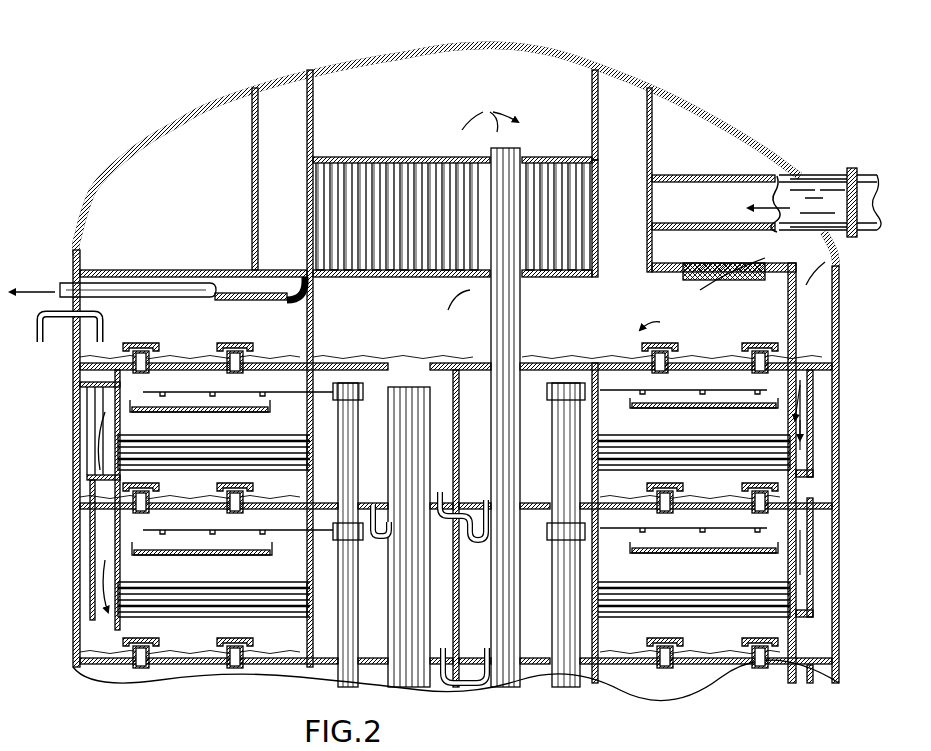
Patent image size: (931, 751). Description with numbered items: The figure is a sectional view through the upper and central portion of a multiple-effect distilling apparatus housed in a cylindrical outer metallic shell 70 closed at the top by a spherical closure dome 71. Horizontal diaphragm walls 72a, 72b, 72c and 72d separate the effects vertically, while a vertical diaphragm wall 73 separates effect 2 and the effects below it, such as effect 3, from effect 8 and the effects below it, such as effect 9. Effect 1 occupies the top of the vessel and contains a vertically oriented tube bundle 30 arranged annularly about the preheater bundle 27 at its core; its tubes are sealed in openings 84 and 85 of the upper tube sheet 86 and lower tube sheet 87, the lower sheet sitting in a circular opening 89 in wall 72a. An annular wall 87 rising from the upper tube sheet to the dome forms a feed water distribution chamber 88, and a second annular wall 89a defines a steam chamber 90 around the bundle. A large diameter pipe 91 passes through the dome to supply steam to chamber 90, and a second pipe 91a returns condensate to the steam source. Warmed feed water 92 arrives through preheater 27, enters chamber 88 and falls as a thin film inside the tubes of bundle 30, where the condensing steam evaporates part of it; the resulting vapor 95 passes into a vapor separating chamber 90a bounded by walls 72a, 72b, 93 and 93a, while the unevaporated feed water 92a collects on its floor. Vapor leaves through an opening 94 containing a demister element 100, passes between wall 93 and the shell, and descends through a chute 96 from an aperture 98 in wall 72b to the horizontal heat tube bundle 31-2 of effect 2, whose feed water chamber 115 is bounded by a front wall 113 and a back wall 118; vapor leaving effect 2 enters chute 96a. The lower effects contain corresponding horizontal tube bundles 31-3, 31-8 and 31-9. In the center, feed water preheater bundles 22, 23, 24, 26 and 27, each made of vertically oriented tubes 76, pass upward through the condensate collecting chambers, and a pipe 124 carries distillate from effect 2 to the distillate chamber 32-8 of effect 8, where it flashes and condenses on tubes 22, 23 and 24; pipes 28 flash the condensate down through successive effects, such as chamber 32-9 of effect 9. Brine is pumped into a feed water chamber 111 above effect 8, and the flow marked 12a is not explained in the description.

The effect 1 is at (340, 70).
The effect 2 is at (848, 441).
The effect 3 is at (842, 623).
The effect 8 is at (65, 432).
The effect 9 is at (68, 554).
The vapor passage 12a is at (300, 312).
The feed water preheater bundle 22 is at (357, 535).
The feed water preheater bundle 23 is at (415, 363).
The feed water preheater bundle 24 is at (430, 458).
The feed water preheater bundle 26 is at (552, 445).
The feed water preheater bundle 27 is at (530, 398).
The pipe 28 is at (358, 540).
The tube bundle 30 is at (556, 166).
The horizontal heat tube bundle 31-2 is at (694, 430).
The horizontal heat tube bundle 31-3 is at (694, 592).
The horizontal heat tube bundle 31-8 is at (225, 431).
The horizontal heat tube bundle 31-9 is at (225, 573).
The distillate chamber 32-8 is at (300, 432).
The distillate collecting chamber 32-9 is at (312, 576).
The outer metallic shell 70 is at (839, 380).
The closure dome 71 is at (542, 48).
The horizontal diaphragm wall 72a is at (624, 244).
The horizontal diaphragm wall 72b is at (385, 363).
The horizontal diaphragm wall 72c is at (528, 503).
The horizontal diaphragm wall 72d is at (558, 656).
The vertical diaphragm wall 73 is at (459, 425).
The vertically oriented tubes 76 is at (576, 183).
The openings 84 is at (468, 190).
The openings 85 is at (372, 277).
The upper tube sheet 86 is at (523, 160).
The lower tube sheet 87 is at (592, 90).
The feed water distribution chamber 88 is at (460, 91).
The circular opening 89 is at (325, 285).
The second annular wall 89a is at (652, 132).
The steam chamber 90 is at (636, 137).
The vapor separating chamber 90a is at (585, 332).
The first pipe 91 is at (772, 176).
The second pipe 91a is at (224, 262).
The warmed feed water 92 is at (490, 111).
The unevaporated feed water 92a is at (552, 363).
The vertical wall 93 is at (788, 306).
The vertical wall 93a is at (313, 348).
The opening 94 is at (714, 258).
The vapor 95 is at (826, 268).
The chute 96 is at (815, 402).
The chute 96a is at (815, 578).
The aperture 98 is at (805, 362).
The demister element 100 is at (718, 263).
The feed water chamber 111 is at (196, 345).
The vertical front wall 113 is at (778, 410).
The feed water chamber 115 is at (694, 431).
The back wall 118 is at (598, 420).
The pipe 124 is at (474, 546).